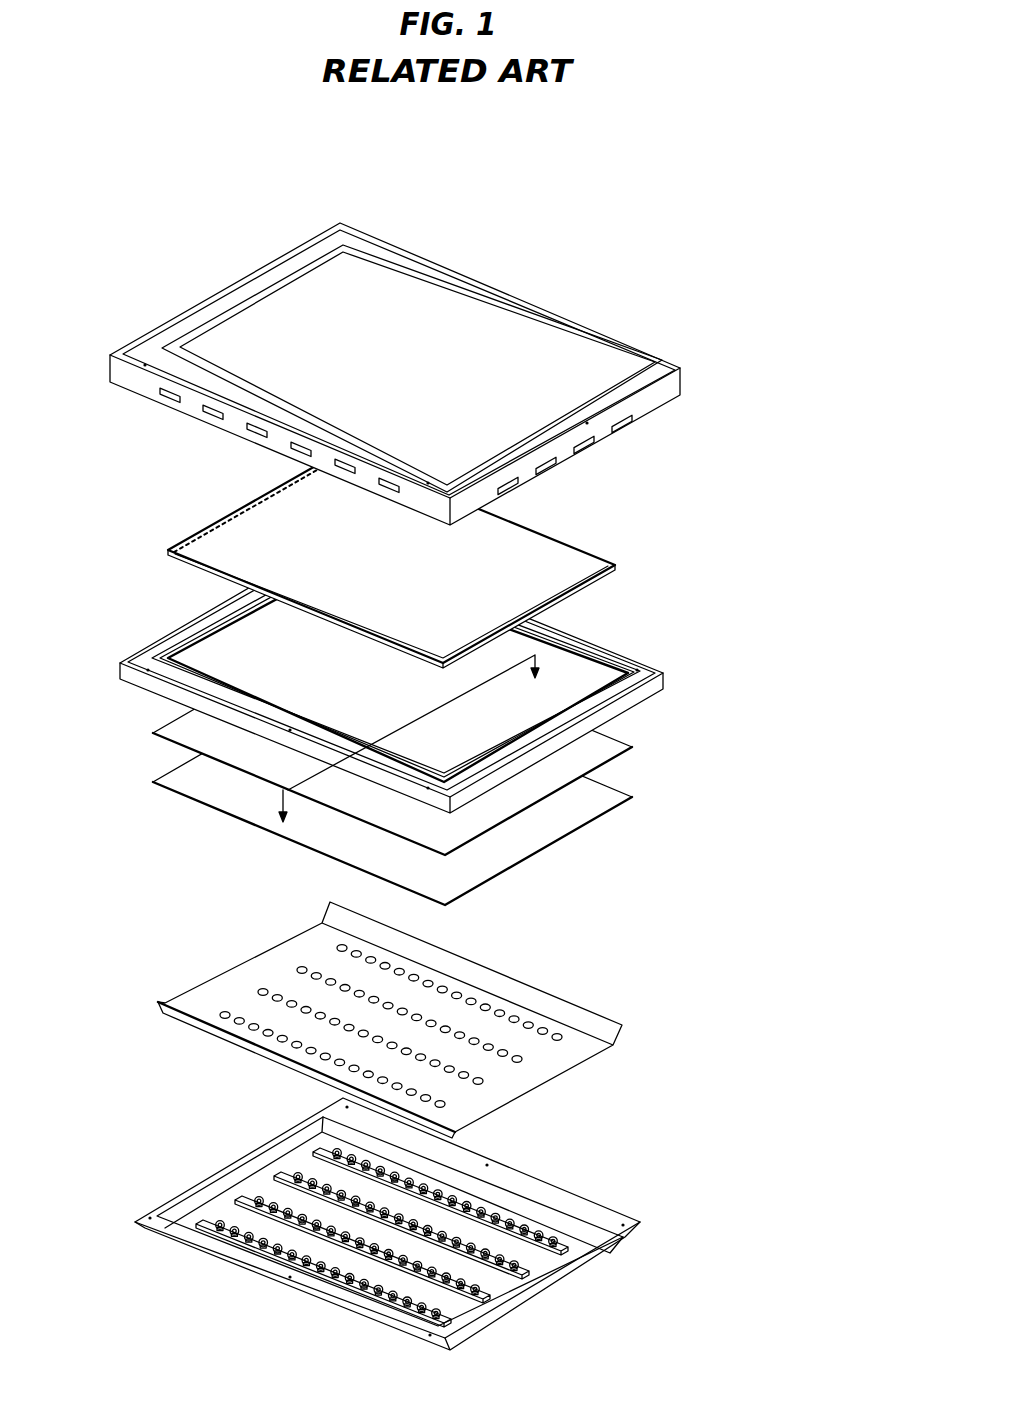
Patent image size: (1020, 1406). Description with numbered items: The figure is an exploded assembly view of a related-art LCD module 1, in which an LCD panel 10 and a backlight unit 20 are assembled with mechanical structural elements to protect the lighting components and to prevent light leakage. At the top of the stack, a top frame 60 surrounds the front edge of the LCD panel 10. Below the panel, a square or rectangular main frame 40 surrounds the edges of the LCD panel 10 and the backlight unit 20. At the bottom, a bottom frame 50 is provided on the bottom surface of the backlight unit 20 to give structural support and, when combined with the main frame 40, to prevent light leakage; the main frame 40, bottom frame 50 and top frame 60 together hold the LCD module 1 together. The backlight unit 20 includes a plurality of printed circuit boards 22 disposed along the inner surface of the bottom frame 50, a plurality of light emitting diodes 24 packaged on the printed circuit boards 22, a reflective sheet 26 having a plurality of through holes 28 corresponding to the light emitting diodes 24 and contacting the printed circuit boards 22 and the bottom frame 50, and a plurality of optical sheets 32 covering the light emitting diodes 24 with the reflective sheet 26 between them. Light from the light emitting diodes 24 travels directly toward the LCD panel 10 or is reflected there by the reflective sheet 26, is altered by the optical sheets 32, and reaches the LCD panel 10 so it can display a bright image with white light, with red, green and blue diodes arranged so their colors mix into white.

The LCD module 1 is at (572, 267).
The top frame 60 is at (680, 387).
The LCD panel 10 is at (528, 560).
The main frame 40 is at (664, 672).
The optical sheets 32 is at (659, 742).
The backlight unit 20 is at (456, 987).
The through holes 28 is at (557, 1037).
The reflective sheet 26 is at (417, 1020).
The light emitting diodes 24 is at (414, 1223).
The printed circuit boards 22 is at (568, 1247).
The bottom frame 50 is at (422, 1224).